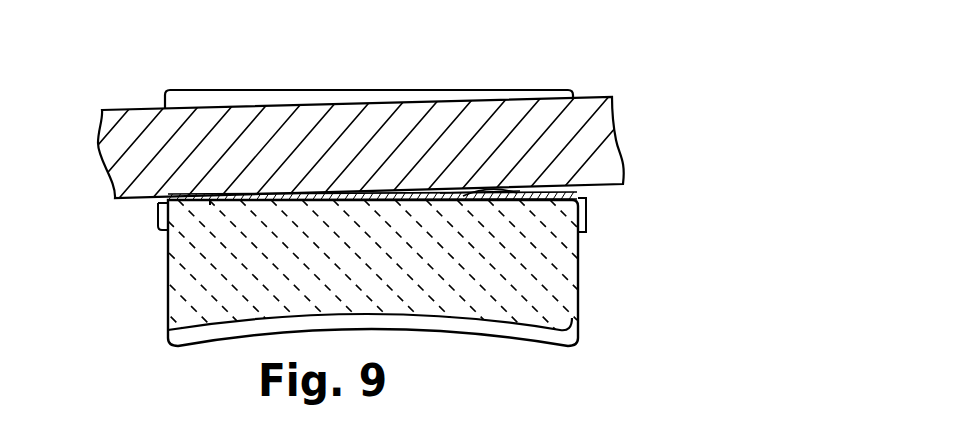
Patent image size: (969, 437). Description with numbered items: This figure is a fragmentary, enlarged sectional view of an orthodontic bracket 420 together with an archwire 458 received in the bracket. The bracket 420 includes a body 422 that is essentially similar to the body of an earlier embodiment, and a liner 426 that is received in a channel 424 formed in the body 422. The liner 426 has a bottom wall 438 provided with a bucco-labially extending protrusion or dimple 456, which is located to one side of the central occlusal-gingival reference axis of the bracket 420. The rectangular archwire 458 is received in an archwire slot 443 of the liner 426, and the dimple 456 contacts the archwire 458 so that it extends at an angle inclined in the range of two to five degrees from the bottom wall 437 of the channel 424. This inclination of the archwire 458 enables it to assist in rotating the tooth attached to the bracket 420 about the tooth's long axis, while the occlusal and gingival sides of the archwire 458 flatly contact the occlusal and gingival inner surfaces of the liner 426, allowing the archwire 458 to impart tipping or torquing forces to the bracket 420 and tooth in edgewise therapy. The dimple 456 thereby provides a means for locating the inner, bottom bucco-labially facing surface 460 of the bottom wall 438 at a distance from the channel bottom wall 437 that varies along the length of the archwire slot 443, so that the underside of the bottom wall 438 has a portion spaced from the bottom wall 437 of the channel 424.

The bracket 420 is at (588, 306).
The body 422 is at (542, 326).
The channel 424 is at (477, 193).
The liner 426 is at (590, 220).
The bottom wall of the channel 437 is at (493, 200).
The bottom wall of the liner 438 is at (207, 205).
The archwire slot 443 is at (248, 93).
The dimple 456 is at (493, 203).
The archwire 458 is at (137, 150).
The inner bottom bucco-labially facing surface 460 is at (565, 188).